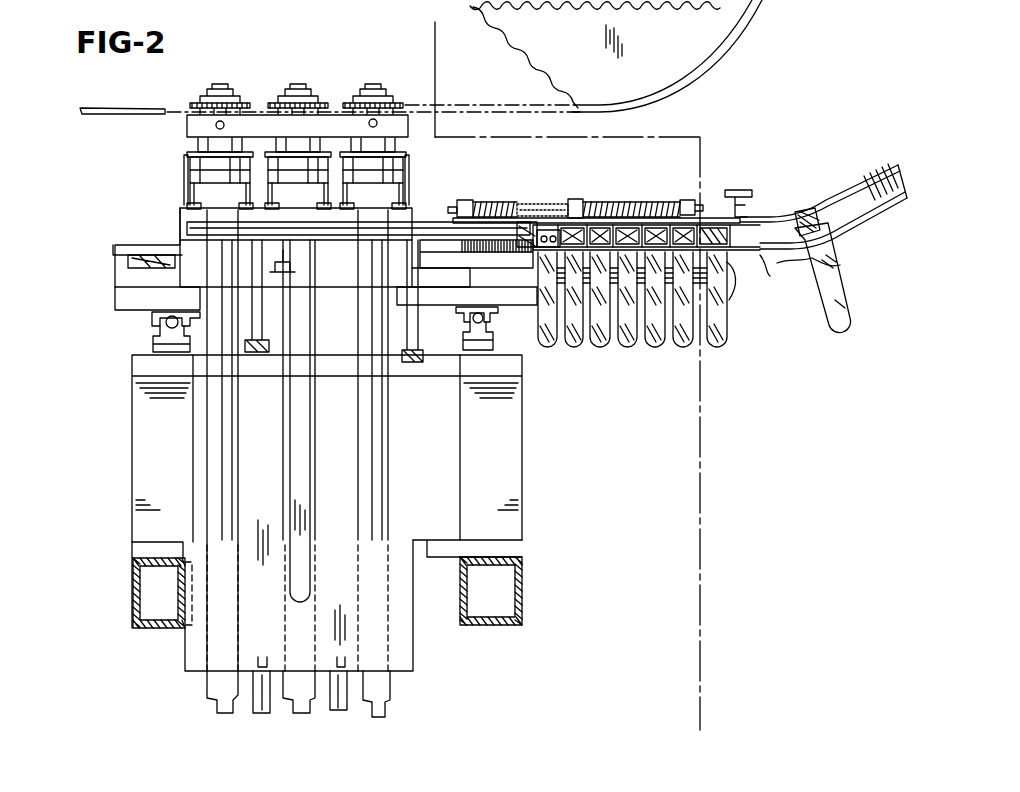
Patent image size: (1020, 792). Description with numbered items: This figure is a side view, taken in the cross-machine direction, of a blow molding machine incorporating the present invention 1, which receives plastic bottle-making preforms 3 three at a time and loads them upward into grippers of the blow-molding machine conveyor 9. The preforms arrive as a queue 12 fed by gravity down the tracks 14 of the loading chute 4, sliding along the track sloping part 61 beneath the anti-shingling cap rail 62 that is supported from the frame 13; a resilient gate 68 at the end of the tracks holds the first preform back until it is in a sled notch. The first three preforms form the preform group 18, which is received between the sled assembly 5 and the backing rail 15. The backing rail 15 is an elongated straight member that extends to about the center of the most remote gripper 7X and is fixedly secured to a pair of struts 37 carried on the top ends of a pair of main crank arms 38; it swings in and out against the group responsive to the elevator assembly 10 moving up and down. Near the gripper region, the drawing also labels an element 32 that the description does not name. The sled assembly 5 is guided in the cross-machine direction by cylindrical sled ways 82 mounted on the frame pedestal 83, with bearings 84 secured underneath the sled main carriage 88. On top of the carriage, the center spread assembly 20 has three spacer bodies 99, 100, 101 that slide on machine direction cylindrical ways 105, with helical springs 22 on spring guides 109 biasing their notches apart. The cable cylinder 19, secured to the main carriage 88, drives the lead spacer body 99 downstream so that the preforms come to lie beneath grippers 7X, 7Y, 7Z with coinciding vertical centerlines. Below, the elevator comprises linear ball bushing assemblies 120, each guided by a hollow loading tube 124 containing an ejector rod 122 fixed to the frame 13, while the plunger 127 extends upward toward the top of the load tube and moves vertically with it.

The present invention 1 is at (435, 22).
The plastic bottle-making preforms 3 is at (582, 322).
The loading chute 4 is at (862, 166).
The sled assembly 5 is at (650, 210).
The gripper 7X is at (207, 163).
The gripper 7Y is at (287, 163).
The gripper 7Z is at (365, 163).
The blow-molding machine conveyor 9 is at (752, 35).
The elevator assembly 10 is at (197, 442).
The queue 12 is at (740, 355).
The frame 13 is at (134, 593).
The tracks 14 is at (766, 281).
The backing rail 15 is at (213, 228).
The preform group 18 is at (607, 350).
The cable cylinder 19 is at (168, 245).
The center spread assembly 20 is at (497, 202).
The helical springs 22 is at (560, 200).
The posts 32 is at (185, 158).
The struts 37 is at (390, 268).
The main crank arms 38 is at (255, 322).
The track sloping part 61 is at (840, 277).
The anti-shingling cap rail 62 is at (828, 206).
The resilient gate 68 is at (507, 210).
The sled ways 82 is at (165, 344).
The frame pedestal 83 is at (178, 486).
The bearings 84 is at (157, 322).
The sled main carriage 88 is at (116, 299).
The spacer body 99 is at (470, 200).
The spacer body 100 is at (620, 205).
The spacer body 101 is at (737, 188).
The machine direction cylindrical ways 105 is at (140, 252).
The spring guides 109 is at (560, 202).
The linear ball bushing assemblies 120 is at (412, 648).
The ejector rod 122 is at (365, 715).
The loading tube 124 is at (282, 468).
The plunger 127 is at (305, 545).